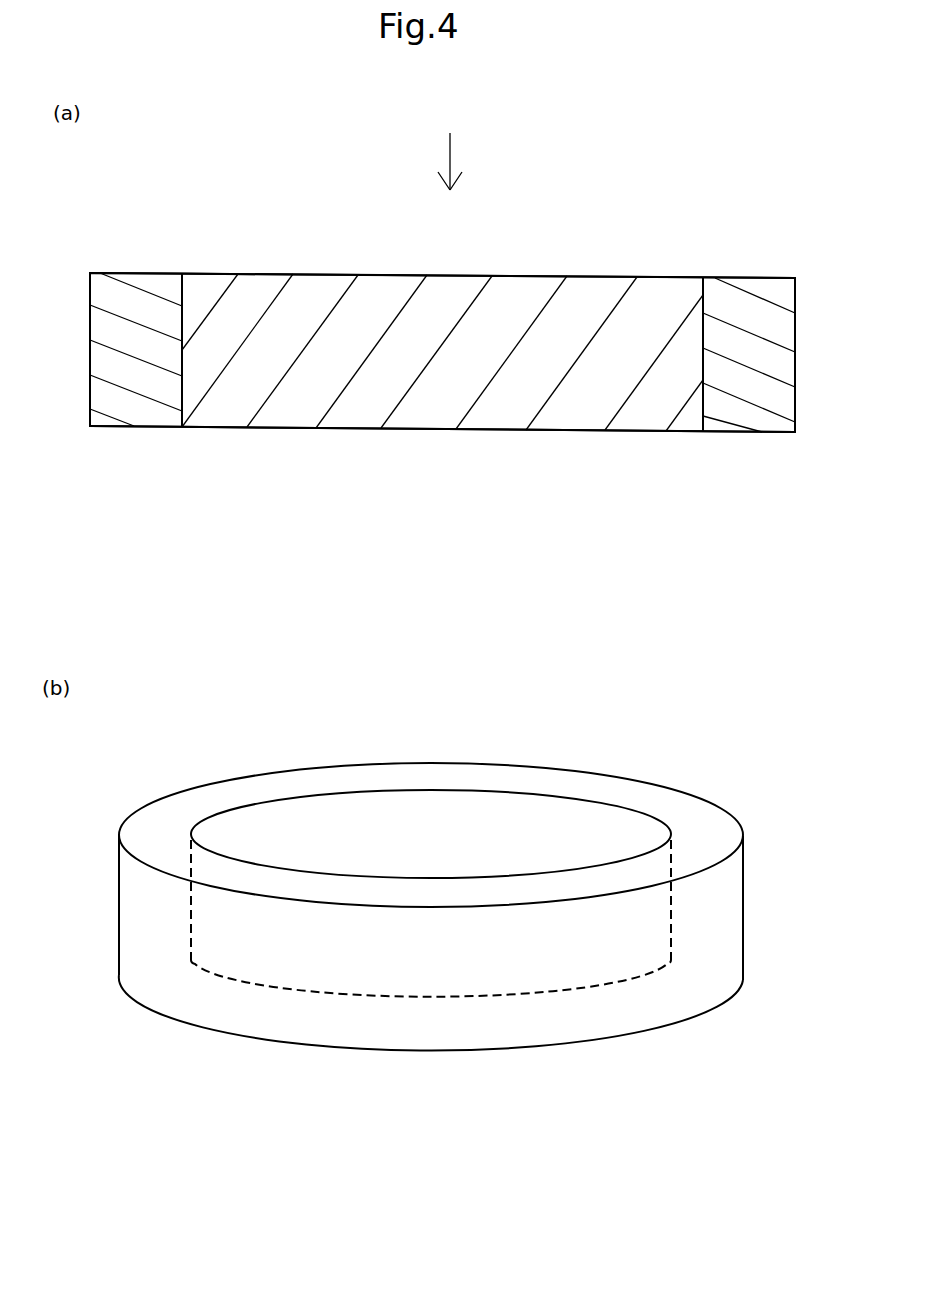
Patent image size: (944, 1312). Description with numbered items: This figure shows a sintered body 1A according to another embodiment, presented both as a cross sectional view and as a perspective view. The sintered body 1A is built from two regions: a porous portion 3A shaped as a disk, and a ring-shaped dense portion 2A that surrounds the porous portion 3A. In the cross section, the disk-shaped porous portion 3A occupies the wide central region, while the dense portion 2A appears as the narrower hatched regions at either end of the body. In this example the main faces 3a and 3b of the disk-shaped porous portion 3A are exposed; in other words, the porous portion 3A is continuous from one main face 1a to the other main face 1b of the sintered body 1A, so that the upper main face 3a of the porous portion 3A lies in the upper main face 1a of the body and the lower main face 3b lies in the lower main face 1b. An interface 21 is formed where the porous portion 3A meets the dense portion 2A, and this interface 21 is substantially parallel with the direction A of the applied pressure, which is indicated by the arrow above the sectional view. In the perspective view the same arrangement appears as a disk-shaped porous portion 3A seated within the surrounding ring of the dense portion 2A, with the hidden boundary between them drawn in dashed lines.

The sintered body 1A is at (819, 249).
The dense portion 2A is at (723, 312).
The interface 21 is at (180, 393).
The porous portion 3A is at (507, 302).
The main face 1a is at (217, 273).
The main face 1b is at (222, 430).
The main face 3a is at (330, 273).
The main face 3b is at (340, 430).
The direction of the applied pressure A is at (450, 155).